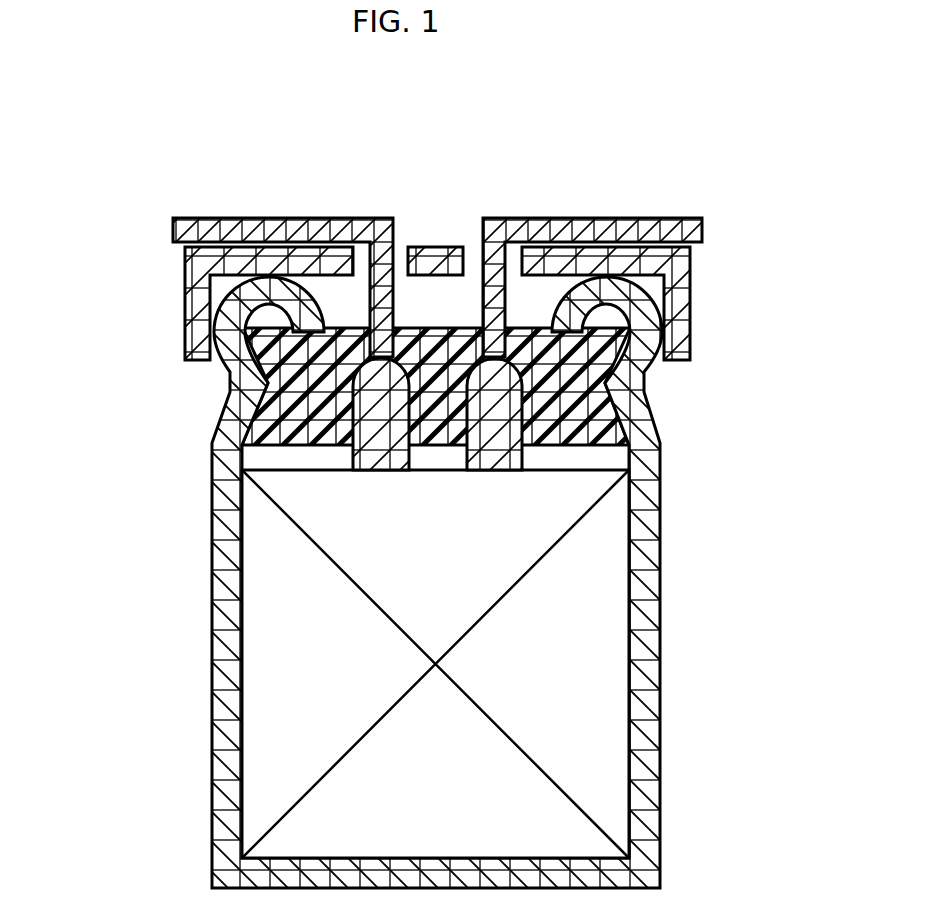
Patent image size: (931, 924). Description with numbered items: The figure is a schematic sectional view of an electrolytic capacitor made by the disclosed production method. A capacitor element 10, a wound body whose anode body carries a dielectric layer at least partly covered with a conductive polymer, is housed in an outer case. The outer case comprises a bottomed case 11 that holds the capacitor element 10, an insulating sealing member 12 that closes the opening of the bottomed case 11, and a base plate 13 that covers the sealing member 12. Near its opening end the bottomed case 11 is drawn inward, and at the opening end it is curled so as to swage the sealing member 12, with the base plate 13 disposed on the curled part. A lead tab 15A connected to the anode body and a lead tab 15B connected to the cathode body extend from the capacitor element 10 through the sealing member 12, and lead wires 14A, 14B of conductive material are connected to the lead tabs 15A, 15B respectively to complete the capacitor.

The capacitor element 10 is at (295, 635).
The bottomed case 11 is at (648, 592).
The sealing member 12 is at (567, 397).
The base plate 13 is at (195, 283).
The lead wire 14A is at (278, 222).
The lead wire 14B is at (602, 222).
The lead tab 15A is at (380, 400).
The lead tab 15B is at (490, 430).